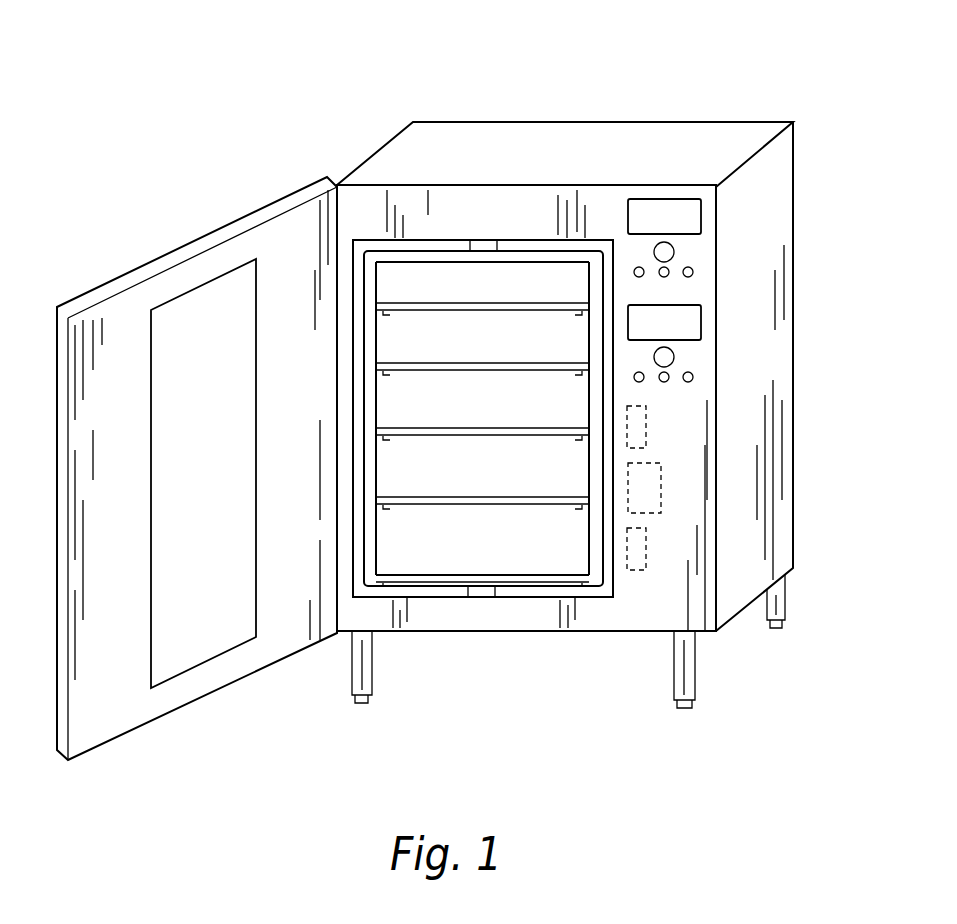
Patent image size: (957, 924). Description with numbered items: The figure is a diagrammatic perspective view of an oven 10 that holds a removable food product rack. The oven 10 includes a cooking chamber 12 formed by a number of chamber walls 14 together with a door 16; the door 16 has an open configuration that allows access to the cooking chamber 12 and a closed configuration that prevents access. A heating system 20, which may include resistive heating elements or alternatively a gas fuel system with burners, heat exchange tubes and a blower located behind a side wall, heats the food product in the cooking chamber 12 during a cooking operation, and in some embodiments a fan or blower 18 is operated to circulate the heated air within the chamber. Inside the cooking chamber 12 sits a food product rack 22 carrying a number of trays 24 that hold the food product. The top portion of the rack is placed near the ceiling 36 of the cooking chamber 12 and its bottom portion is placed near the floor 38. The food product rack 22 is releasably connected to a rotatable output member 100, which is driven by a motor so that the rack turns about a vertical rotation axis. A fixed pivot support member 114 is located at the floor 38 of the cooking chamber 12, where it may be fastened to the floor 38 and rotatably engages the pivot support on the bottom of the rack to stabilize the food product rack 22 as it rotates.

The oven 10 is at (294, 83).
The cooking chamber 12 is at (528, 458).
The chamber walls 14 is at (437, 277).
The door 16 is at (118, 693).
The fan or blower 18 is at (653, 477).
The heating system 20 is at (646, 422).
The food product rack 22 is at (377, 402).
The trays 24 is at (493, 503).
The ceiling 36 is at (518, 260).
The floor 38 is at (520, 592).
The rotatable output member 100 is at (487, 240).
The fixed pivot support member 114 is at (487, 593).